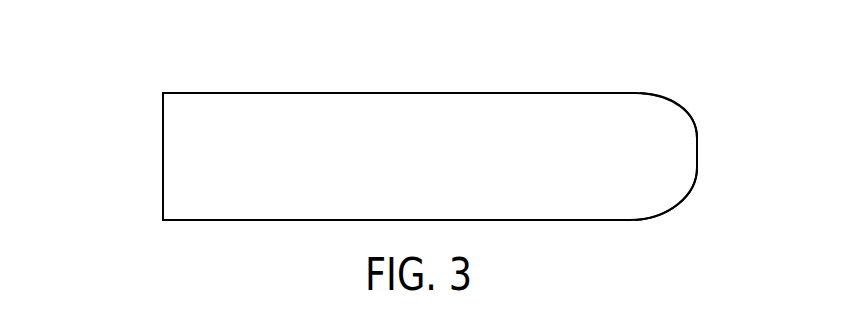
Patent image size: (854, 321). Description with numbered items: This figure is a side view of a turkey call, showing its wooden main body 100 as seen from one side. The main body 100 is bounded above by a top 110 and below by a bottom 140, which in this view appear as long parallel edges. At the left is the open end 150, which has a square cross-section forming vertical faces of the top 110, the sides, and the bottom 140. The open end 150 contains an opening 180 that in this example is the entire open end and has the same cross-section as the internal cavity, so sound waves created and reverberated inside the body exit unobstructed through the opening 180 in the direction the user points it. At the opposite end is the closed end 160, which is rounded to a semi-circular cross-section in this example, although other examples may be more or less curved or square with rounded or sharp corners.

The main body 100 is at (645, 93).
The top 110 is at (208, 93).
The bottom 140 is at (195, 221).
The open end 150 is at (163, 176).
The closed end 160 is at (695, 137).
The opening 180 is at (163, 143).